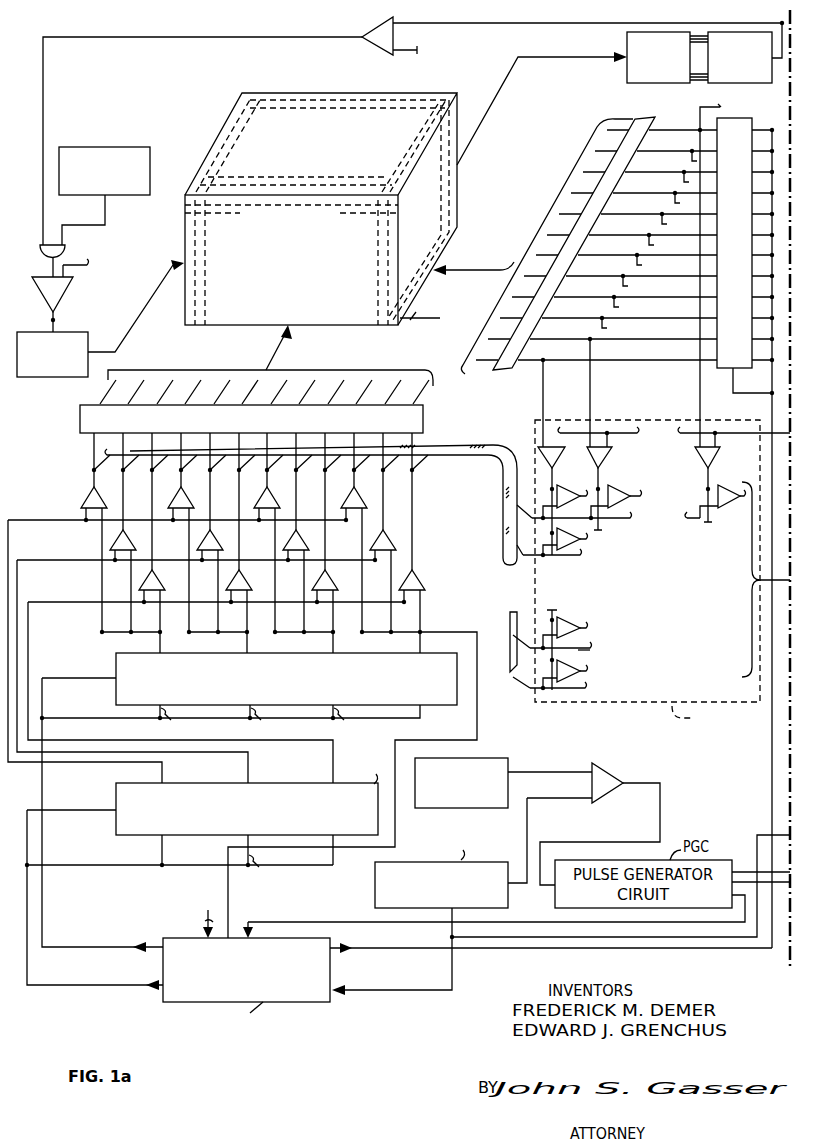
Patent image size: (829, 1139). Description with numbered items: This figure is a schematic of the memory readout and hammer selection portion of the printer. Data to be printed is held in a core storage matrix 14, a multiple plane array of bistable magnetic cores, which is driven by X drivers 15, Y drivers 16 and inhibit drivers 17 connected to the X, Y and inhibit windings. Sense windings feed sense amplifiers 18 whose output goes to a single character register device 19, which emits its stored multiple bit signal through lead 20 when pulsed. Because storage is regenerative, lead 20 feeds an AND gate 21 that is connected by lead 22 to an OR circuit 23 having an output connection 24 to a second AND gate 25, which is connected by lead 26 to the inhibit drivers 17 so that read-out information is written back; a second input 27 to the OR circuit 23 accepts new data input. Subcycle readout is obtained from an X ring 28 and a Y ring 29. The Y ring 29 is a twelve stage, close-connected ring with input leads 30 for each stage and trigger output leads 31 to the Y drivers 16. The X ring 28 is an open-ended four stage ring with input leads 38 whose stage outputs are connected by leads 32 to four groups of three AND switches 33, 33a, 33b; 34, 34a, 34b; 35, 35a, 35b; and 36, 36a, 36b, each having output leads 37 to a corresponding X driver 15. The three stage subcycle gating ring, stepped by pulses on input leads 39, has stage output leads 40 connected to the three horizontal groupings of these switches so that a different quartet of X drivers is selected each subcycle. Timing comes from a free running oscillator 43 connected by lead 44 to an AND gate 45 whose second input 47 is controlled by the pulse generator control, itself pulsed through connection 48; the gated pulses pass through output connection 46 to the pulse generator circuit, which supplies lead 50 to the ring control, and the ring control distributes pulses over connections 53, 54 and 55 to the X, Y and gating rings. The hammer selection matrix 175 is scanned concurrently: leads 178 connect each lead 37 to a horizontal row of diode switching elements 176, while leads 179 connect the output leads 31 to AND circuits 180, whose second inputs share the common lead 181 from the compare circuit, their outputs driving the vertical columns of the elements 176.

The core storage matrix 14 is at (332, 82).
The X drivers 15 is at (423, 413).
The Y drivers 16 is at (497, 383).
The inhibit drivers 17 is at (89, 332).
The sense amplifiers 18 is at (624, 72).
The single character register device 19 is at (719, 84).
The lead 20 is at (474, 26).
The AND gate 21 is at (382, 28).
The lead 22 is at (296, 38).
The OR circuit 23 is at (41, 248).
The output connection 24 is at (49, 263).
The second AND gate 25 is at (39, 290).
The lead 26 is at (54, 320).
The second input 27 is at (102, 217).
The X ring 28 is at (119, 672).
The Y ring 29 is at (757, 125).
The input leads 30 is at (765, 252).
The trigger output leads 31 is at (678, 131).
The leads 32 is at (163, 641).
The AND switch 33 is at (78, 500).
The AND switch 33a is at (111, 545).
The AND switch 33b is at (159, 576).
The AND switch 34 is at (169, 500).
The AND switch 34a is at (198, 545).
The AND switch 34b is at (246, 576).
The AND switch 35 is at (257, 500).
The AND switch 35a is at (285, 545).
The AND switch 35b is at (331, 576).
The AND switch 36 is at (345, 500).
The AND switch 36a is at (372, 545).
The AND switch 36b is at (419, 576).
The output leads 37 is at (91, 448).
The input leads 38 is at (230, 812).
The input leads 39 is at (165, 849).
The stage output leads 40 is at (93, 772).
The free running oscillator 43 is at (506, 759).
The lead 44 is at (564, 773).
The AND gate 45 is at (618, 767).
The output connection 46 is at (658, 795).
The second input 47 is at (564, 799).
The connection 48 is at (636, 940).
The lead 50 is at (538, 923).
The connection 53 is at (116, 949).
The connection 54 is at (414, 949).
The connection 55 is at (137, 989).
The hammer selection matrix 175 is at (662, 577).
The diode switching elements 176 is at (618, 486).
The leads 178 is at (108, 470).
The leads 179 is at (574, 394).
The AND circuits 180 is at (586, 466).
The common lead 181 is at (584, 649).